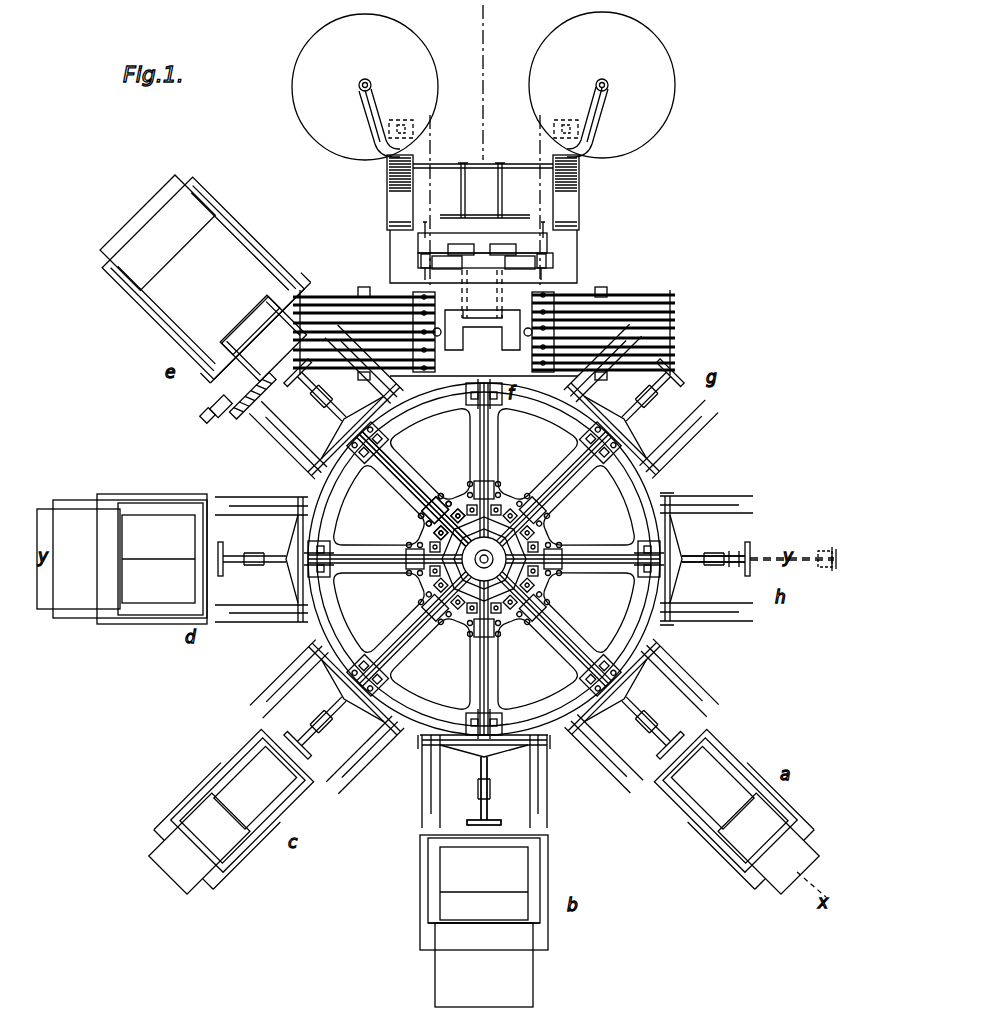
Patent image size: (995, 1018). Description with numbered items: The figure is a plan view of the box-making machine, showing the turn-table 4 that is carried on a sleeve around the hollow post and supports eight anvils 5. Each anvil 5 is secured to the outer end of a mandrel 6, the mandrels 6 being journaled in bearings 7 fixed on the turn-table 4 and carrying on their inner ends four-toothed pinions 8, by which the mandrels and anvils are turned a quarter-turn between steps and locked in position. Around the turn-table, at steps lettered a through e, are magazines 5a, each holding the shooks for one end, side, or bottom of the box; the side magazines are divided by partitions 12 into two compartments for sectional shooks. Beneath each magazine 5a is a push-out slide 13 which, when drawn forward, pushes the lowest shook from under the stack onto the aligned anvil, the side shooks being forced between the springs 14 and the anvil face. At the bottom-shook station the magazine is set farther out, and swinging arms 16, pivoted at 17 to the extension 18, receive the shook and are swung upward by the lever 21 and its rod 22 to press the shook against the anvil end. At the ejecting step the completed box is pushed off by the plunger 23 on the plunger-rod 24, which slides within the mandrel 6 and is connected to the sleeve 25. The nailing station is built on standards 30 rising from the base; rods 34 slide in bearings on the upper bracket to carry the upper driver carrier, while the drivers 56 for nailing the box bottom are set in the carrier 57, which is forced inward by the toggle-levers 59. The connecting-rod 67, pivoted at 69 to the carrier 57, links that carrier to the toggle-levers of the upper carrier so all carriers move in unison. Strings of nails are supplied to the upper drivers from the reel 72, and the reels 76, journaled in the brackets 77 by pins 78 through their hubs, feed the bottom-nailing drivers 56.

The turn-table 4 is at (548, 412).
The anvil 5 is at (448, 749).
The magazine 5a is at (502, 892).
The mandrel 6 is at (385, 500).
The bearing 7 is at (372, 440).
The four-toothed pinion 8 is at (508, 546).
The partition 12 is at (484, 885).
The push-out slide 13 is at (484, 965).
The spring 14 is at (448, 781).
The swinging arm 16 is at (263, 338).
The pivot 17 is at (252, 395).
The extension 18 is at (251, 326).
The lever 21 is at (221, 406).
The rod 22 is at (208, 416).
The plunger 23 is at (498, 820).
The plunger-rod 24 is at (500, 788).
The sleeve 25 is at (420, 545).
The standard 30 is at (390, 205).
The rod 34 is at (441, 344).
The driver 56 is at (420, 262).
The carrier 57 is at (518, 235).
The toggle-lever 59 is at (462, 188).
The connecting-rod 67 is at (471, 262).
The pivot 69 is at (487, 243).
The reel 72 is at (331, 297).
The reel 76 is at (327, 142).
The bracket 77 is at (366, 118).
The pin 78 is at (358, 85).